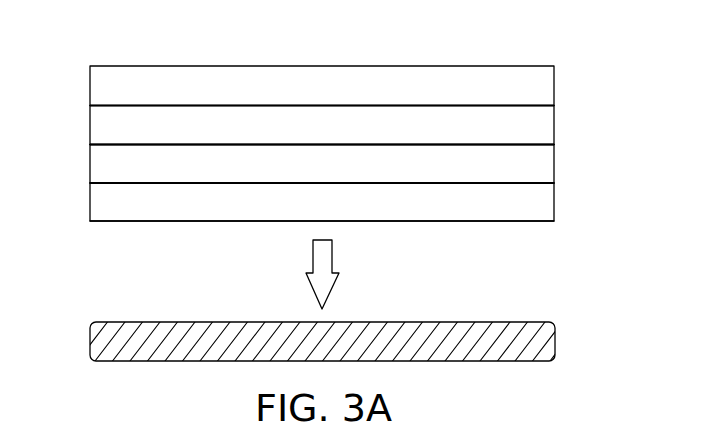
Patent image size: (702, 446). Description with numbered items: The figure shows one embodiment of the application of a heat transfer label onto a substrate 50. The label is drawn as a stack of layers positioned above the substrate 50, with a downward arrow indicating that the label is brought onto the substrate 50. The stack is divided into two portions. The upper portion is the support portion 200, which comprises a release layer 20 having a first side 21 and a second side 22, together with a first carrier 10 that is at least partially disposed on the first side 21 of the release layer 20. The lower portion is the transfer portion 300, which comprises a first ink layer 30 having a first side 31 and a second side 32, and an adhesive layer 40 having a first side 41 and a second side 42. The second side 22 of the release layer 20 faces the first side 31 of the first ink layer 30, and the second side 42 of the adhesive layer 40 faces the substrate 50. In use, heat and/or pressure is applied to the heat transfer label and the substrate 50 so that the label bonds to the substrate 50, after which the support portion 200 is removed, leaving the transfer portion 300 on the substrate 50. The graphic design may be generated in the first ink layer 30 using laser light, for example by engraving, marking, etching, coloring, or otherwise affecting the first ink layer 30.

The first carrier 10 is at (554, 88).
The release layer 20 is at (554, 128).
The first side 21 is at (348, 107).
The second side 22 is at (527, 142).
The first ink layer 30 is at (554, 167).
The first side 31 is at (387, 146).
The second side 32 is at (165, 180).
The adhesive layer 40 is at (554, 207).
The first side 41 is at (273, 185).
The second side 42 is at (473, 219).
The substrate 50 is at (556, 343).
The support portion 200 is at (304, 120).
The transfer portion 300 is at (303, 169).